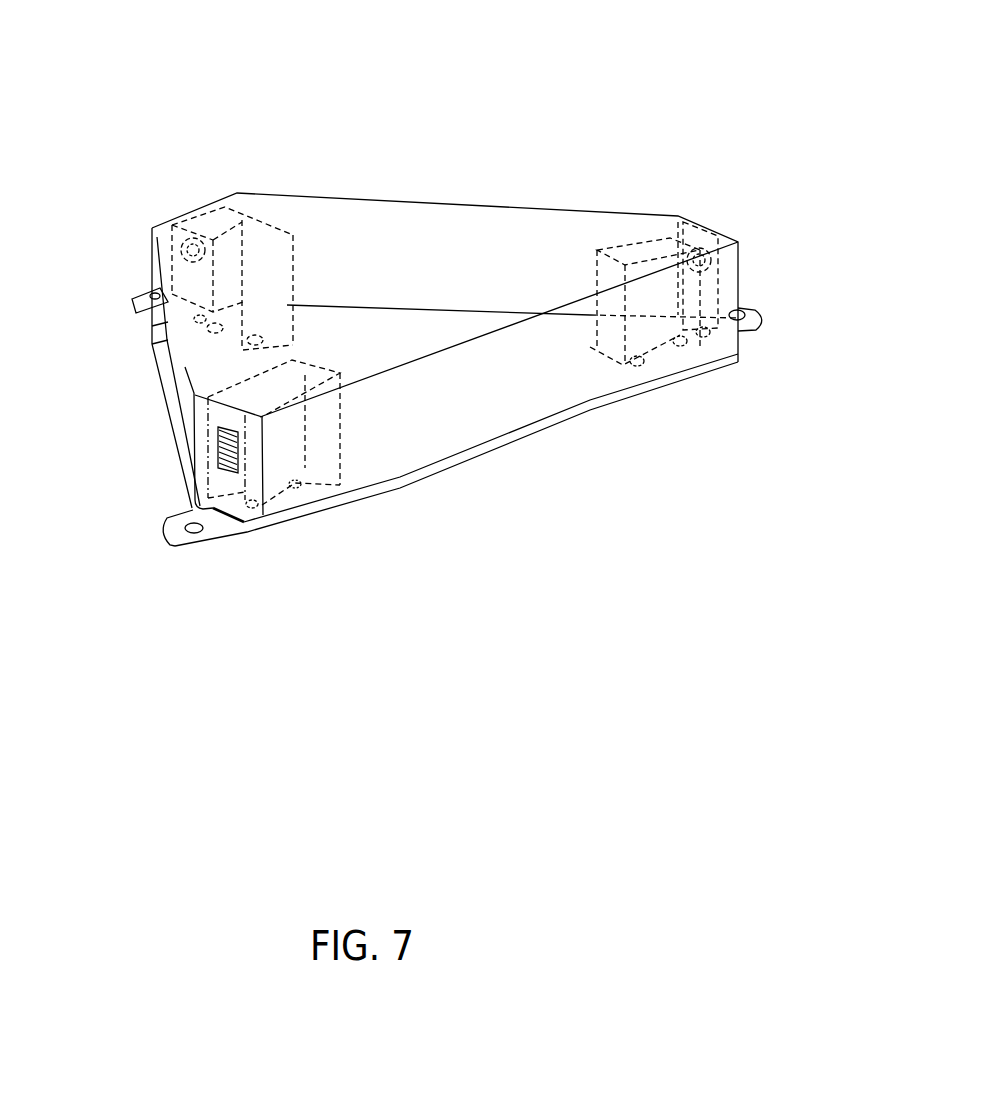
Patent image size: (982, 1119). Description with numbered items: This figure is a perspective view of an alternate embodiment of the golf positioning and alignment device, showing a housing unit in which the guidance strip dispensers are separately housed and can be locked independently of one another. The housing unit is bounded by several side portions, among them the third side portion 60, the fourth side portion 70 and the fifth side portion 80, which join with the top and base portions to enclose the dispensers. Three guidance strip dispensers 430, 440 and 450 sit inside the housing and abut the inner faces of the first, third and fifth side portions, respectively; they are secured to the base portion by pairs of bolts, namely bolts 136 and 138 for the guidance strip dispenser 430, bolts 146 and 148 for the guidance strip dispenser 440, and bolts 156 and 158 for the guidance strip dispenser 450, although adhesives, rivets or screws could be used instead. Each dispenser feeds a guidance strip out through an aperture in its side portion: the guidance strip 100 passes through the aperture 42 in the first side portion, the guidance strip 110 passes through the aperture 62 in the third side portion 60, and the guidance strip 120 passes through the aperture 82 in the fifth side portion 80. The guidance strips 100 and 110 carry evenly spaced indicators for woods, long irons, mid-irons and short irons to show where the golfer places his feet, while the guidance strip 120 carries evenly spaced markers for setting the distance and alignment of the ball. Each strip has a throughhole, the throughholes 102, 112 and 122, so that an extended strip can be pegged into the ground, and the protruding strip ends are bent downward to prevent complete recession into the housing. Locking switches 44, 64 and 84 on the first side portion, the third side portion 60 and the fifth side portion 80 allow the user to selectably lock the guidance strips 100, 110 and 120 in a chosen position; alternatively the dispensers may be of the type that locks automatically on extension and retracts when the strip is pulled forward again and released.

The fourth side portion 70 is at (500, 219).
The fifth side portion 80 is at (162, 235).
The locking switch 84 is at (196, 246).
The aperture 82 is at (195, 324).
The guidance strip dispenser 450 is at (252, 252).
The bolt 158 is at (219, 322).
The bolt 156 is at (260, 333).
The third side portion 60 is at (728, 265).
The locking switch 64 is at (702, 268).
The aperture 62 is at (703, 336).
The guidance strip dispenser 440 is at (651, 246).
The bolt 148 is at (680, 346).
The bolt 146 is at (636, 366).
The guidance strip dispenser 430 is at (299, 381).
The locking switch 44 is at (228, 452).
The aperture 42 is at (241, 527).
The bolt 136 is at (301, 490).
The bolt 138 is at (252, 509).
The guidance strip 100 is at (210, 530).
The throughhole 102 is at (191, 535).
The guidance strip 110 is at (770, 320).
The throughhole 112 is at (744, 312).
The guidance strip 120 is at (147, 304).
The throughhole 122 is at (154, 292).